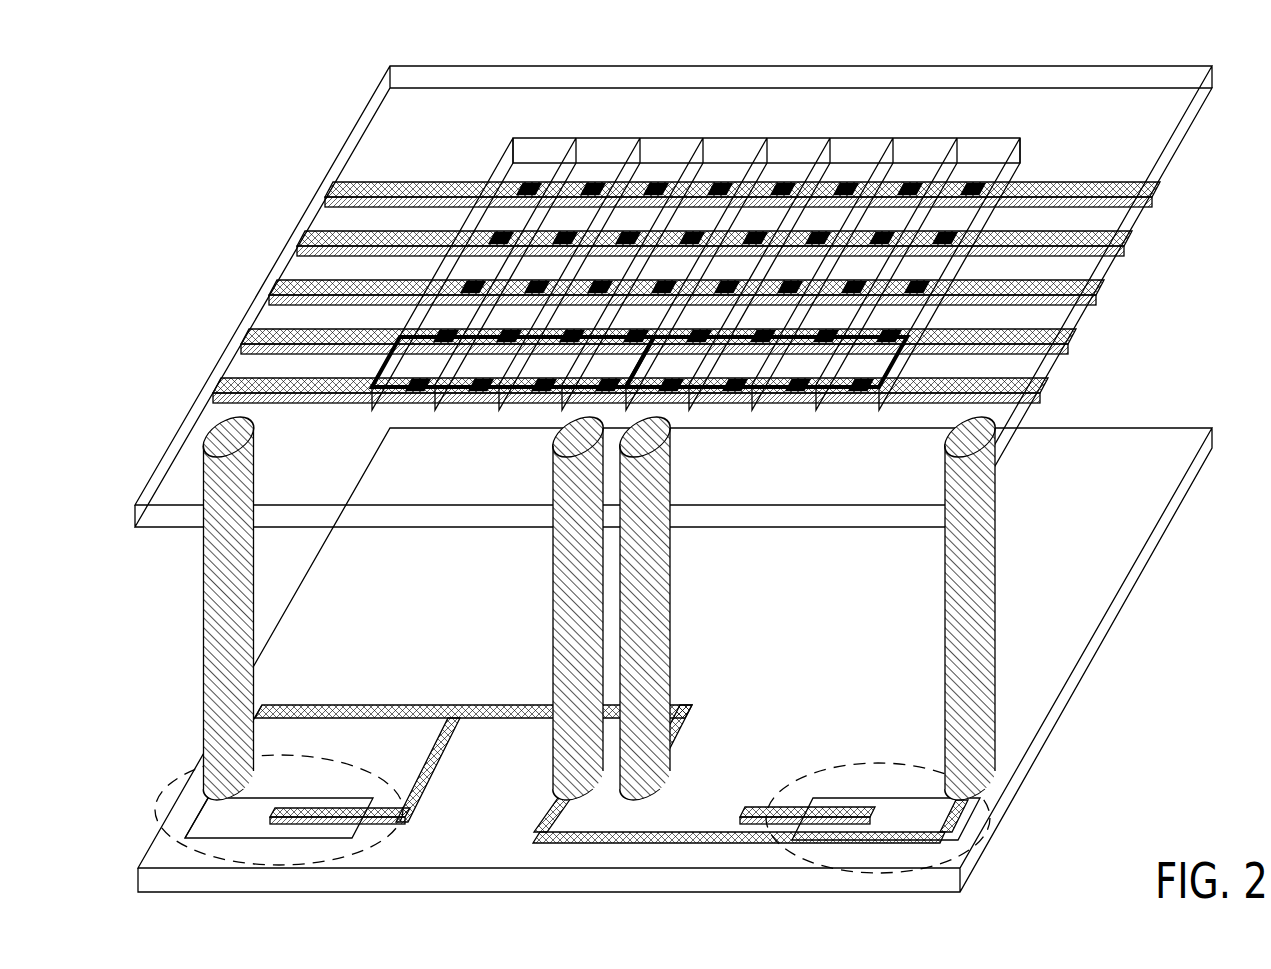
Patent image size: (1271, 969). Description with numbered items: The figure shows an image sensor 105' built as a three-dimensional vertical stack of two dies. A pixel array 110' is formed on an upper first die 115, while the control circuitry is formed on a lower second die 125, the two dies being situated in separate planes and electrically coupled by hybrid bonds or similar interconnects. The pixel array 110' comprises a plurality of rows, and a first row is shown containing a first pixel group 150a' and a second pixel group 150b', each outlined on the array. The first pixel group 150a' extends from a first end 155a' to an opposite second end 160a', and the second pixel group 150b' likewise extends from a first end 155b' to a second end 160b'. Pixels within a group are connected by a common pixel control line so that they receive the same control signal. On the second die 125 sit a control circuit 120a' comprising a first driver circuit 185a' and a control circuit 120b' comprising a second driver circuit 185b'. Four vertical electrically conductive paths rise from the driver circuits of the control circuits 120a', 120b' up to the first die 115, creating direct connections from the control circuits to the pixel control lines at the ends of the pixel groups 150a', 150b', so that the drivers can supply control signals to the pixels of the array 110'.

The image sensor 105' is at (656, 489).
The first die 115 is at (418, 108).
The pixel array 110' is at (713, 217).
The second die 125 is at (1095, 560).
The first end 155a' is at (381, 345).
The first end 155b' is at (766, 417).
The first pixel group 150a' is at (496, 440).
The second pixel group 150b' is at (766, 439).
The second end 160a' is at (583, 342).
The second end 160b' is at (836, 341).
The control circuit 120a' is at (396, 785).
The control circuit 120b' is at (806, 818).
The first driver circuit 185a' is at (297, 871).
The second driver circuit 185b' is at (860, 876).